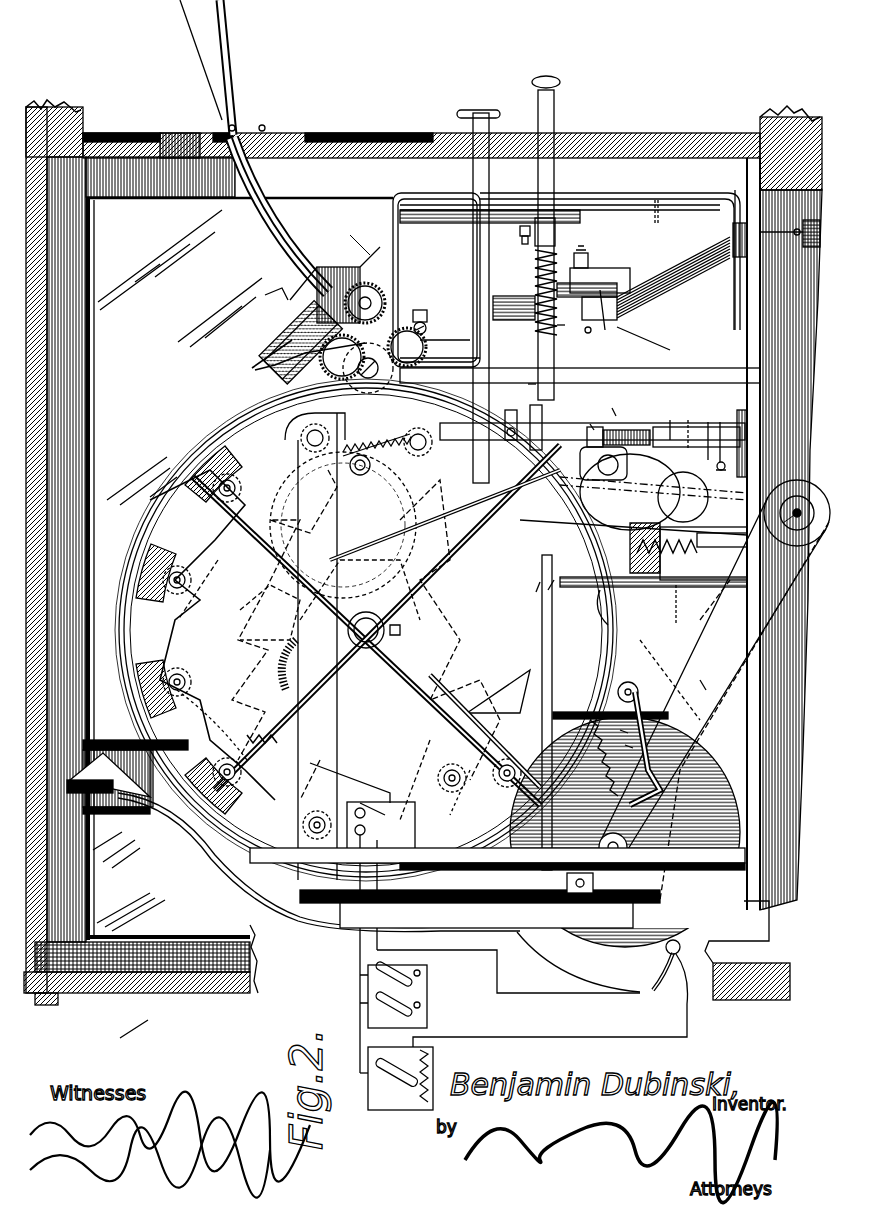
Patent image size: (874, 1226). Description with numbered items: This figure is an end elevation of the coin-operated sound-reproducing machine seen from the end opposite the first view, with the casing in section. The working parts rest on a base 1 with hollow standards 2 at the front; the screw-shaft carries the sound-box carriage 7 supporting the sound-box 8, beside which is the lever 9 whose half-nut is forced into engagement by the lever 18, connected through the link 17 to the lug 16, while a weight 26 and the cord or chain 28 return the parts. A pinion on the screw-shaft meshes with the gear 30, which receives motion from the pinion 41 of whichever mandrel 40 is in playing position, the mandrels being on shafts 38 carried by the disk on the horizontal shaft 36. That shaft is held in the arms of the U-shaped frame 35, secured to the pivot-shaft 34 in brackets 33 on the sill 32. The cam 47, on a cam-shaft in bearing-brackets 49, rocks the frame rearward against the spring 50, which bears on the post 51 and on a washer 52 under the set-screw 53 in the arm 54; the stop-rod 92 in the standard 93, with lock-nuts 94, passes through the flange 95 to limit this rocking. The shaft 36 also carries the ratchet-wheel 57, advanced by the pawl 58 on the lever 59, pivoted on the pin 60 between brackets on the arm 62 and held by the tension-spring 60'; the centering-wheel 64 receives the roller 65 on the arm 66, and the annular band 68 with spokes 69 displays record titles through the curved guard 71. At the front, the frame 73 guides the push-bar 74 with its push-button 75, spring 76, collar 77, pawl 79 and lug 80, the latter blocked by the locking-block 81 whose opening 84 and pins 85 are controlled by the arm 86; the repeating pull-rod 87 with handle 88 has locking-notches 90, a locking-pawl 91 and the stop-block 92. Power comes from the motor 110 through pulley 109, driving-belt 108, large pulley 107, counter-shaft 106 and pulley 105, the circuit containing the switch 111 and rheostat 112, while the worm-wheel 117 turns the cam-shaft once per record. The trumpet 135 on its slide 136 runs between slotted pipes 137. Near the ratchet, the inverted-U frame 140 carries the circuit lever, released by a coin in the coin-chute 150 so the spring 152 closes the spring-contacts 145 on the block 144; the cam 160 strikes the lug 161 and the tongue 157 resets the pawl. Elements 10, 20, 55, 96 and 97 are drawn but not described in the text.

The base 1 is at (768, 348).
The hollow standards 2 is at (660, 310).
The sound-box carriage 7 is at (305, 282).
The sound-box 8 is at (275, 325).
The lever 9 is at (340, 357).
The pinion 10 is at (350, 288).
The lug 16 is at (395, 330).
The link 17 is at (354, 241).
The lever 18 is at (723, 439).
The bar 20 is at (707, 433).
The weight 26 is at (806, 248).
The cord or chain 28 is at (430, 322).
The gear 30 is at (368, 367).
The bar or sill 32 is at (735, 570).
The brackets or standards 33 is at (677, 605).
The pivot-shaft 34 is at (537, 600).
The U-shaped frame 35 is at (420, 612).
The horizontal shaft 36 is at (366, 650).
The mandrel-carrying shafts 38 is at (182, 690).
The mandrel 40 is at (150, 585).
The pinion 41 is at (178, 595).
The cam 47 is at (633, 491).
The bearing-brackets 49 is at (750, 450).
The spring 50 is at (630, 575).
The vertical post or standard 51 is at (670, 680).
The washer 52 is at (703, 689).
The adjustable set-screw 53 is at (597, 605).
The arm 54 is at (645, 580).
The lever 55 is at (551, 597).
The ratchet-wheel 57 is at (283, 570).
The pawl 58 is at (410, 470).
The lever 59 is at (364, 454).
The pin 60 is at (650, 748).
The tension-spring 60' is at (445, 515).
The rearwardly-extending arm 62 is at (668, 780).
The centering-wheel 64 is at (222, 545).
The antifriction-roller 65 is at (450, 785).
The pivotally-mounted arm 66 is at (480, 780).
The annular band 68 is at (185, 475).
The spokes 69 is at (245, 500).
The curved guard 71 is at (142, 572).
The frame 73 is at (660, 224).
The longitudinally-movable bar 74 is at (560, 110).
The thumb-piece or push-button 75 is at (560, 80).
The coiled compression-spring 76 is at (521, 260).
The collar 77 is at (556, 230).
The spring-pressed pawl 79 is at (540, 686).
The lug or finger 80 is at (514, 329).
The slidable locking-block 81 is at (600, 300).
The opening 84 is at (532, 390).
The pins 85 is at (587, 343).
The arm 86 is at (560, 325).
The pull-rod 87 is at (518, 238).
The handle or pole 88 is at (478, 108).
The locking-notches 90 is at (440, 351).
The spring locking-pawl 91 is at (456, 230).
The stop-block 92 is at (425, 223).
The standard 93 is at (580, 422).
The lock-nuts 94 is at (510, 322).
The flange 95 is at (539, 427).
The nut 96 is at (591, 421).
The bracket 97 is at (495, 322).
The pulley 105 is at (798, 480).
The counter-shaft 106 is at (790, 508).
The large pulley 107 is at (800, 546).
The driving-belt 108 is at (685, 770).
The pulley 109 is at (625, 857).
The motor 110 is at (547, 945).
The switch 111 is at (368, 990).
The rheostat 112 is at (368, 1098).
The worm-wheel 117 is at (592, 262).
The trumpet 135 is at (192, 30).
The slide 136 is at (236, 132).
The slotted pipes 137 is at (265, 130).
The inverted-U-shaped frame 140 is at (284, 656).
The block 144 is at (362, 918).
The spring-contacts 145 is at (322, 770).
The coin-chute 150 is at (292, 448).
The spring 152 is at (380, 480).
The inclined tongue or cam 157 is at (255, 368).
The cam 160 is at (689, 423).
The lug 161 is at (671, 418).